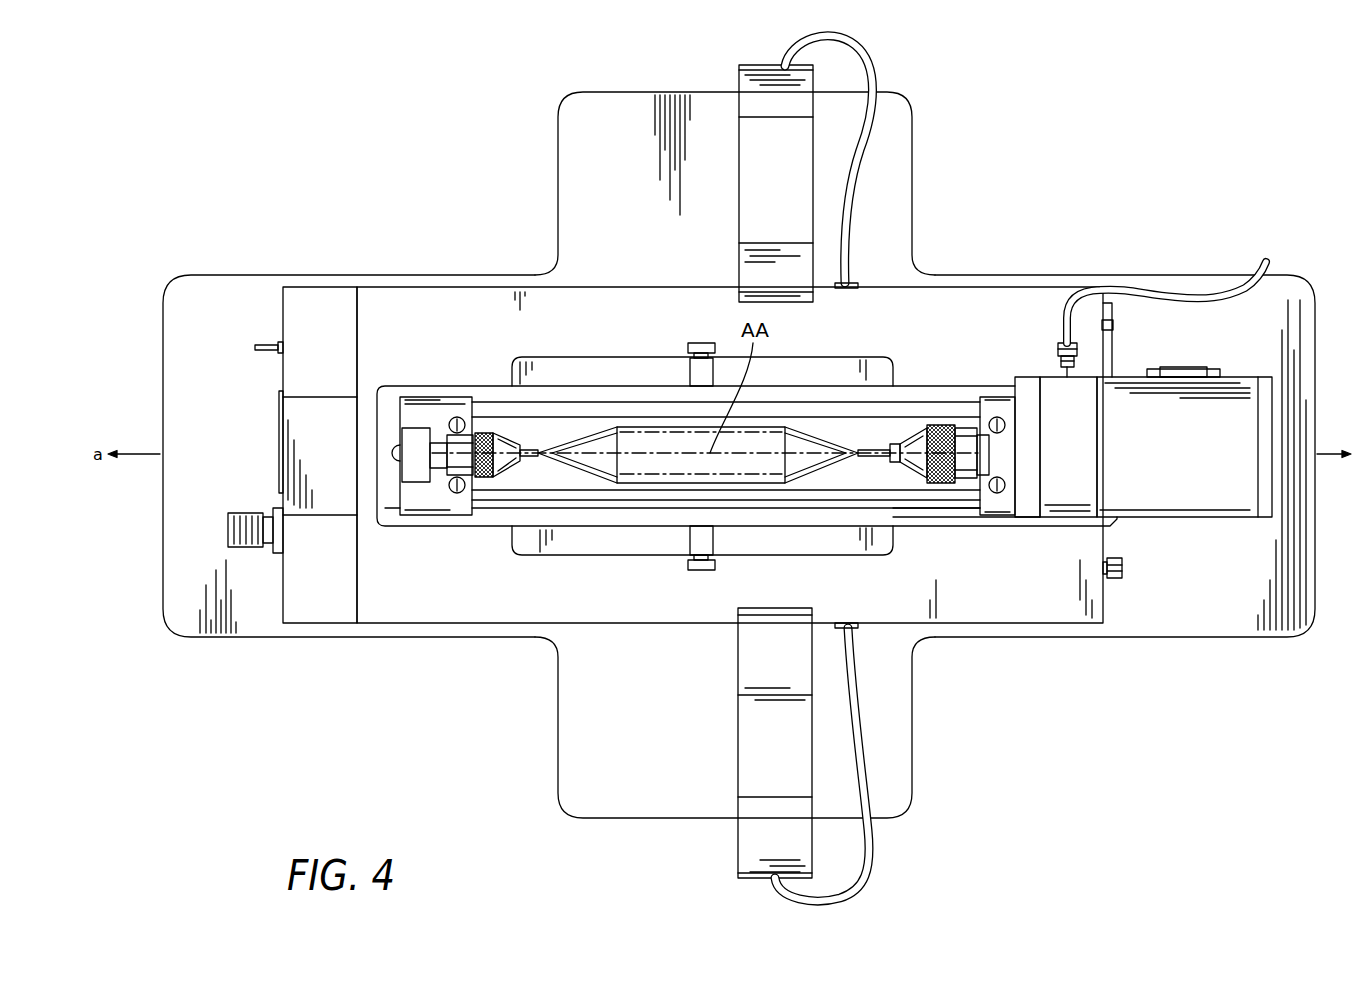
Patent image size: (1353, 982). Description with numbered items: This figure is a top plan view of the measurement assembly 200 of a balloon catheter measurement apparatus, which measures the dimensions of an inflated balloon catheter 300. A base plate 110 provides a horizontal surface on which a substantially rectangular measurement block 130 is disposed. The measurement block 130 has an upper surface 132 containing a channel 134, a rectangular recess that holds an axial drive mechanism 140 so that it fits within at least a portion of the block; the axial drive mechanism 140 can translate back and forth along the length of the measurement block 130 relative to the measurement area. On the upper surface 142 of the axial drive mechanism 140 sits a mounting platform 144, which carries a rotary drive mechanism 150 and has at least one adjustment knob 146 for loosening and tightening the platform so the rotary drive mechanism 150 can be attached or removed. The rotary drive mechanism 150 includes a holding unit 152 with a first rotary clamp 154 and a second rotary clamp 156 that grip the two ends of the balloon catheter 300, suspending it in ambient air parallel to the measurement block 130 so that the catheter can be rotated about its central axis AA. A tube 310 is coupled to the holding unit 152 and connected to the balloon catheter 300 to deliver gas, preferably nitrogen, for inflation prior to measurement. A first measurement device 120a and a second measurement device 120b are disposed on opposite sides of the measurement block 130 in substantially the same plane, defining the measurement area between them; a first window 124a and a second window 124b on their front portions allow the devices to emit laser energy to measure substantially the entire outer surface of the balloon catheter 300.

The base plate 110 is at (255, 615).
The first measurement device 120a is at (750, 157).
The second measurement device 120b is at (752, 755).
The first window 124a is at (748, 297).
The second window 124b is at (773, 611).
The measurement block 130 is at (378, 622).
The upper surface 132 is at (546, 605).
The channel 134 is at (315, 457).
The axial drive mechanism 140 is at (917, 527).
The upper surface 142 is at (950, 527).
The mounting platform 144 is at (522, 555).
The adjustment knob 146 is at (702, 343).
The rotary drive mechanism 150 is at (878, 393).
The holding unit 152 is at (1070, 407).
The first rotary clamp 154 is at (917, 440).
The second rotary clamp 156 is at (503, 428).
The measurement assembly 200 is at (1090, 124).
The balloon catheter 300 is at (753, 440).
The tube 310 is at (1259, 267).